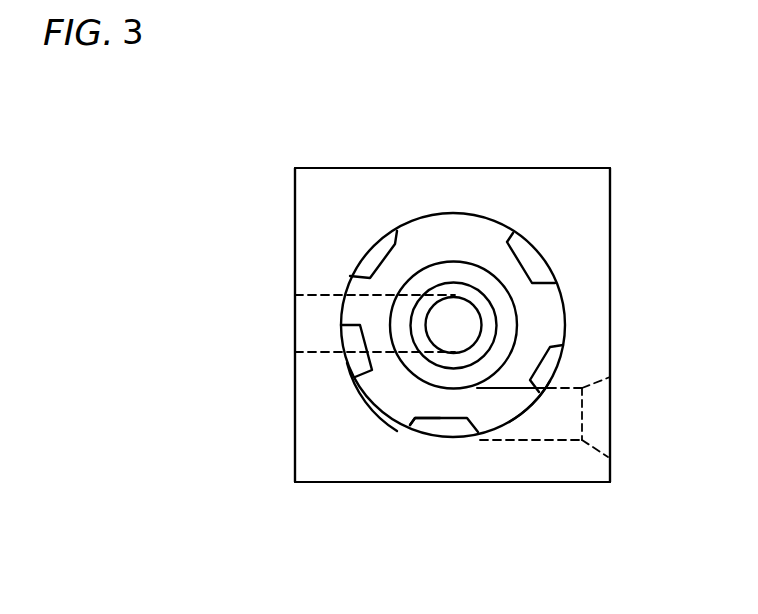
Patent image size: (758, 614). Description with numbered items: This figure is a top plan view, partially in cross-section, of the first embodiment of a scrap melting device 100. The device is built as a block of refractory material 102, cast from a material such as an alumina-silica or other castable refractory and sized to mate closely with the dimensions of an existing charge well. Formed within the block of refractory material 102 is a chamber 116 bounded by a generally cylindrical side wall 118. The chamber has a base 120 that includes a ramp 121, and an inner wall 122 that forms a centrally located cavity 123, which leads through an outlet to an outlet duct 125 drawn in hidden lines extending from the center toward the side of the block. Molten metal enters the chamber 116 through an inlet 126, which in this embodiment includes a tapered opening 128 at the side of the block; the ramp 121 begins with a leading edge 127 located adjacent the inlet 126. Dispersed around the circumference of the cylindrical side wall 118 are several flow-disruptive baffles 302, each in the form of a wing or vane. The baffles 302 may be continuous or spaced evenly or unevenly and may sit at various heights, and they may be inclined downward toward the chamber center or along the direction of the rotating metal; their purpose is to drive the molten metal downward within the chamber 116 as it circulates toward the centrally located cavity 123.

The scrap melting device 100 is at (290, 127).
The block of refractory material 102 is at (597, 240).
The chamber 116 is at (470, 247).
The cylindrical side wall 118 is at (480, 213).
The base 120 is at (431, 413).
The ramp 121 is at (388, 398).
The inner wall 122 is at (507, 331).
The centrally located cavity 123 is at (447, 328).
The outlet duct 125 is at (320, 317).
The inlet 126 is at (580, 418).
The leading edge 127 is at (533, 408).
The tapered opening 128 is at (622, 387).
The flow-disruptive baffle 302 is at (380, 232).